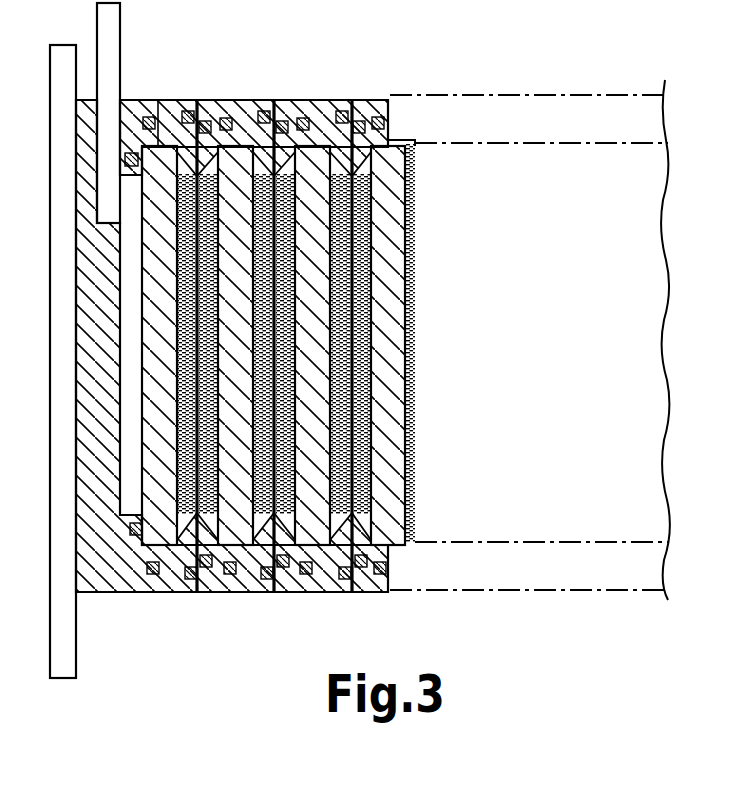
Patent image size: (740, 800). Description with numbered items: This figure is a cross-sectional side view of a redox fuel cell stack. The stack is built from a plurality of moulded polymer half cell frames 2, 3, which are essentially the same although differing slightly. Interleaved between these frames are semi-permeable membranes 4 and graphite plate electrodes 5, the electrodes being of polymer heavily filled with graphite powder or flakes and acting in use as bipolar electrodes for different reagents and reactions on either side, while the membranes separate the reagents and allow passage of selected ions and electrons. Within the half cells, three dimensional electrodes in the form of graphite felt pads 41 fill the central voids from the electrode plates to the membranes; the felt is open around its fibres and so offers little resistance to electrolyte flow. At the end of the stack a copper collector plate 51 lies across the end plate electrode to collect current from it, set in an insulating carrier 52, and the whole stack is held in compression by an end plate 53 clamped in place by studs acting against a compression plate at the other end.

The half cell frame 2 is at (220, 100).
The half cell frame 3 is at (325, 103).
The semi-permeable membrane 4 is at (297, 305).
The graphite felt pad 41 is at (417, 190).
The graphite plate electrode 5 is at (380, 527).
The copper collector plate 51 is at (108, 43).
The insulating carrier 52 is at (112, 572).
The end plate 53 is at (62, 662).